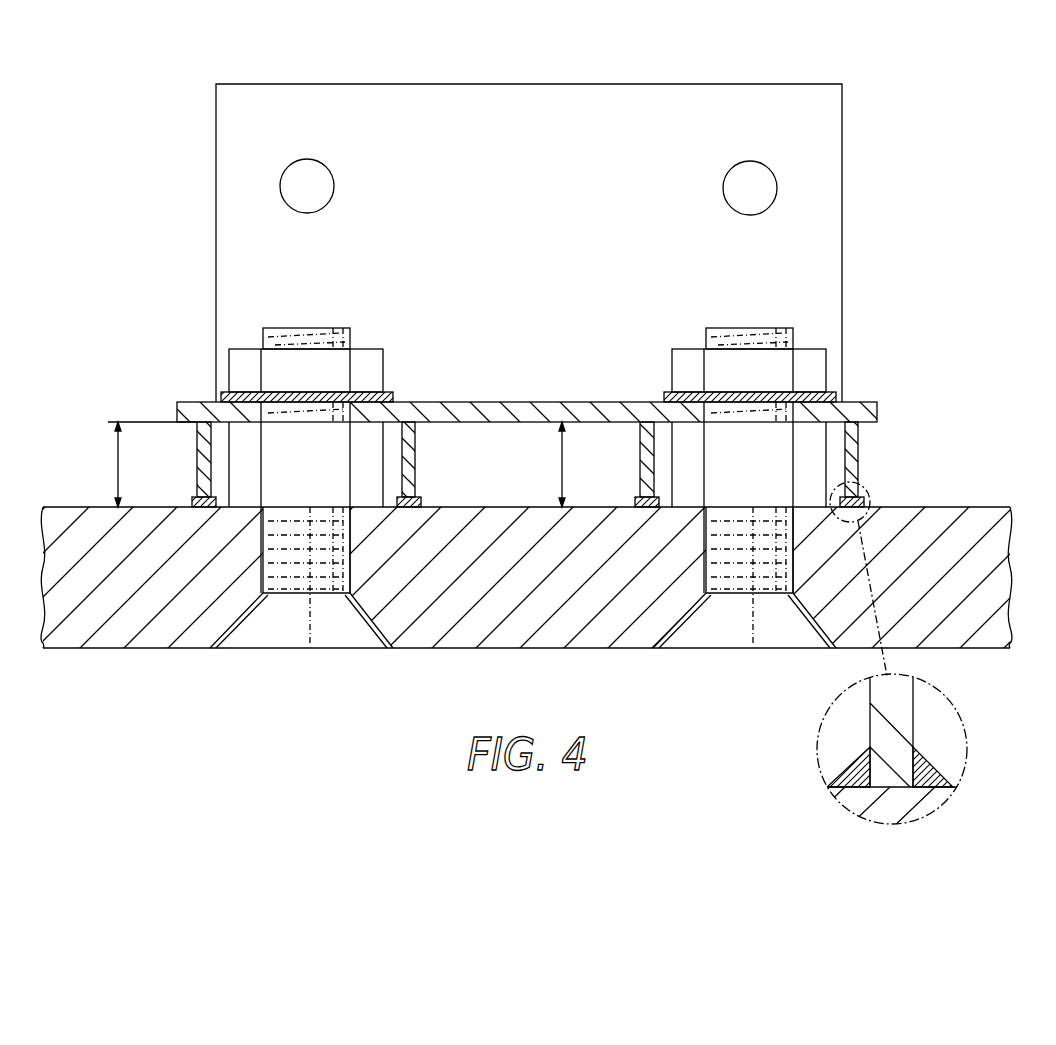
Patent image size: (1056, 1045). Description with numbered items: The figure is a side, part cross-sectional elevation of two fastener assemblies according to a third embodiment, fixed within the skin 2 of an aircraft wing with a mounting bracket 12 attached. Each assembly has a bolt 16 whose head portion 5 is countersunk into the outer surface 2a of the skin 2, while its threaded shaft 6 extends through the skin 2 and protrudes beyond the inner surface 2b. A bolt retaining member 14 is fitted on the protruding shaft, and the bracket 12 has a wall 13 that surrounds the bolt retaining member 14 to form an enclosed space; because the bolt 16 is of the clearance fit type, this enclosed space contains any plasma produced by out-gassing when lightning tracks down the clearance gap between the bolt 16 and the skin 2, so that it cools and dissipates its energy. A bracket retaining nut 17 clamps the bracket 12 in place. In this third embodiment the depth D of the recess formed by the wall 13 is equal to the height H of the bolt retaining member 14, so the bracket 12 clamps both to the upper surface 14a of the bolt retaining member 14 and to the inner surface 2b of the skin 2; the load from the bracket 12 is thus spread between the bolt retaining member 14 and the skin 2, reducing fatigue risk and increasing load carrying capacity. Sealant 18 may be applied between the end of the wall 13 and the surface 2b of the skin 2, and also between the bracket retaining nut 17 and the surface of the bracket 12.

The skin 2 is at (150, 635).
The outer surface 2a is at (68, 650).
The inner surface 2b is at (65, 507).
The head portion 5 is at (307, 636).
The threaded shaft 6 is at (352, 543).
The bracket 12 is at (216, 100).
The wall 13 is at (197, 455).
The bolt retaining member 14 is at (244, 506).
The upper surface 14a is at (363, 400).
The bolt 16 is at (355, 572).
The bracket retaining nut 17 is at (247, 348).
The sealant 18 is at (190, 500).
The depth of the recess D is at (146, 464).
The height of the bolt retaining member H is at (552, 464).